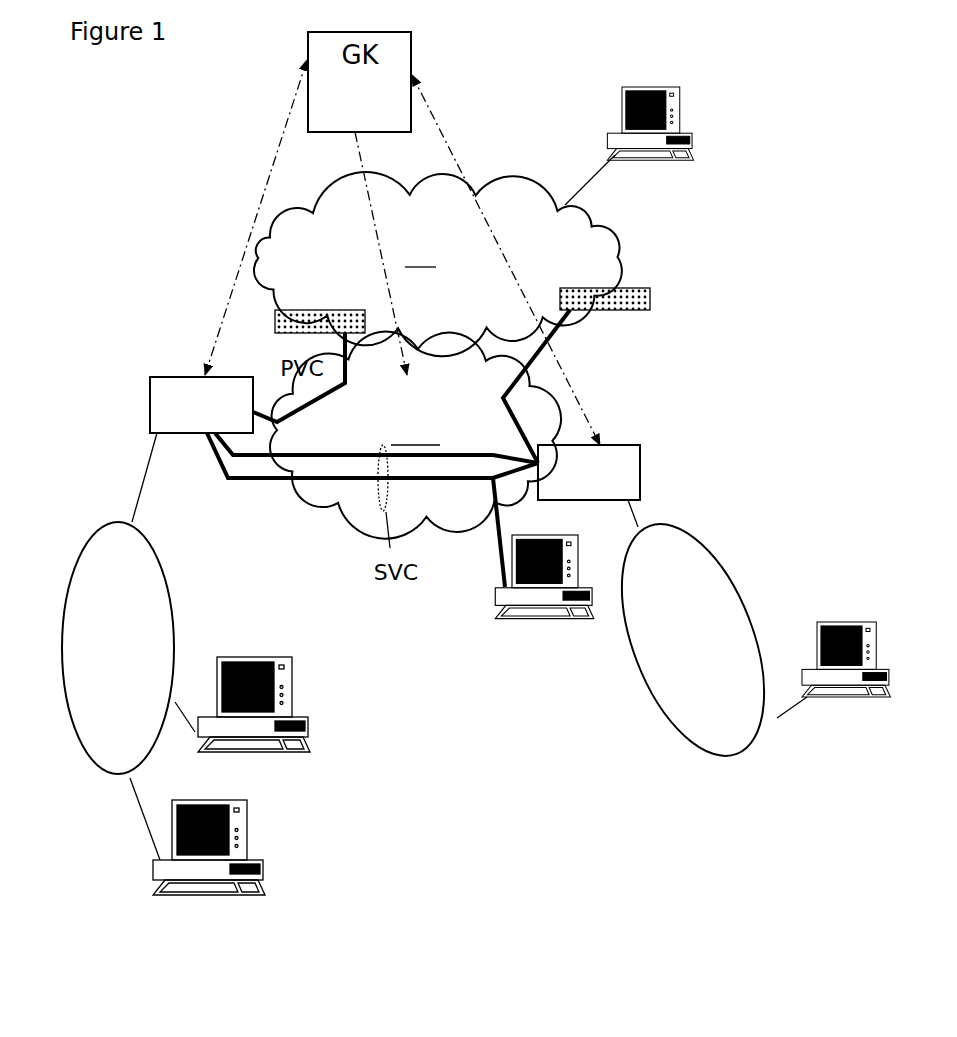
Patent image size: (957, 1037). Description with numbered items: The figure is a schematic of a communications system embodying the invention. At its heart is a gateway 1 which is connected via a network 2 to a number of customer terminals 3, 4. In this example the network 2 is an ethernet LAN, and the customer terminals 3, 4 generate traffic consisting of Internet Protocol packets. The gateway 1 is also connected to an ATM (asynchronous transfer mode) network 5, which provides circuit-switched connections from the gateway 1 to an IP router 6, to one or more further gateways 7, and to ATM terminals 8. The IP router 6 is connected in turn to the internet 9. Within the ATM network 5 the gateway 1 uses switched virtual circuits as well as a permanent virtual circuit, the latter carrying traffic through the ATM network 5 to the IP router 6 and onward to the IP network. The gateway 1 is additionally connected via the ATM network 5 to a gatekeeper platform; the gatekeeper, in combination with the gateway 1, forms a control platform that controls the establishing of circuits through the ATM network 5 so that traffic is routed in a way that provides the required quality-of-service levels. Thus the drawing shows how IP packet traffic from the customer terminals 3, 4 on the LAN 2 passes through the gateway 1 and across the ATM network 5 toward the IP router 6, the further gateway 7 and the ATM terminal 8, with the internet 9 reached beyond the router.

The gateway 1 is at (179, 387).
The network 2 is at (117, 603).
The customer terminal 3 is at (267, 704).
The customer terminal 4 is at (205, 836).
The ATM network 5 is at (415, 435).
The IP router 6 is at (438, 264).
The further gateway 7 is at (692, 632).
The ATM terminal 8 is at (544, 597).
The internet 9 is at (735, 369).